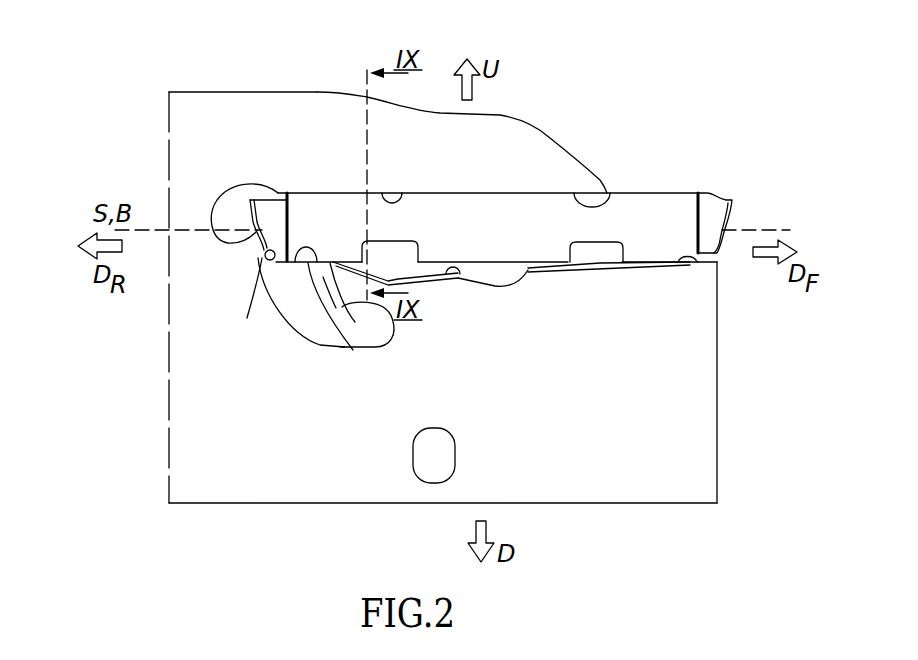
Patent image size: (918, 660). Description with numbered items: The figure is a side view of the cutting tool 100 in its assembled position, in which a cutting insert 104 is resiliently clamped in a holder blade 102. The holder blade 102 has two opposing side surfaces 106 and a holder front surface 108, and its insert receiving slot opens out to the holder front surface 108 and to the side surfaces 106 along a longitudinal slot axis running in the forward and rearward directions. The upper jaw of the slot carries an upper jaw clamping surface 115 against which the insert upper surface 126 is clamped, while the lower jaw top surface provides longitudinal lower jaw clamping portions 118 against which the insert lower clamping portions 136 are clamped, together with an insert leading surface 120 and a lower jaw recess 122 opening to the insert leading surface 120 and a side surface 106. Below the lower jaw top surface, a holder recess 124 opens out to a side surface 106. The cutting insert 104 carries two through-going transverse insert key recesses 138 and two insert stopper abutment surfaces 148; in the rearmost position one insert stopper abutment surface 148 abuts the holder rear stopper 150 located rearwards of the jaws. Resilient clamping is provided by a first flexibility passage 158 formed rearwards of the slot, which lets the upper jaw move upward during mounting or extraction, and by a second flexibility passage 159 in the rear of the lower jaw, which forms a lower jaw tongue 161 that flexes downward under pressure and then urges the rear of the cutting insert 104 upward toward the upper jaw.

The cutting tool 100 is at (527, 91).
The holder blade 102 is at (263, 81).
The cutting insert 104 is at (682, 181).
The side surfaces 106 is at (322, 488).
The holder front surface 108 is at (718, 370).
The upper jaw clamping surface 115 is at (394, 193).
The lower jaw clamping portions 118 is at (296, 264).
The insert leading surface 120 is at (455, 278).
The lower jaw recess 122 is at (506, 278).
The holder recess 124 is at (433, 459).
The insert upper surface 126 is at (544, 195).
The insert lower clamping portions 136 is at (380, 335).
The insert key recesses 138 is at (403, 249).
The insert stopper abutment surfaces 148 is at (255, 240).
The holder rear stopper 150 is at (262, 262).
The first flexibility passage 158 is at (238, 218).
The second flexibility passage 159 is at (331, 326).
The lower jaw tongue 161 is at (333, 277).